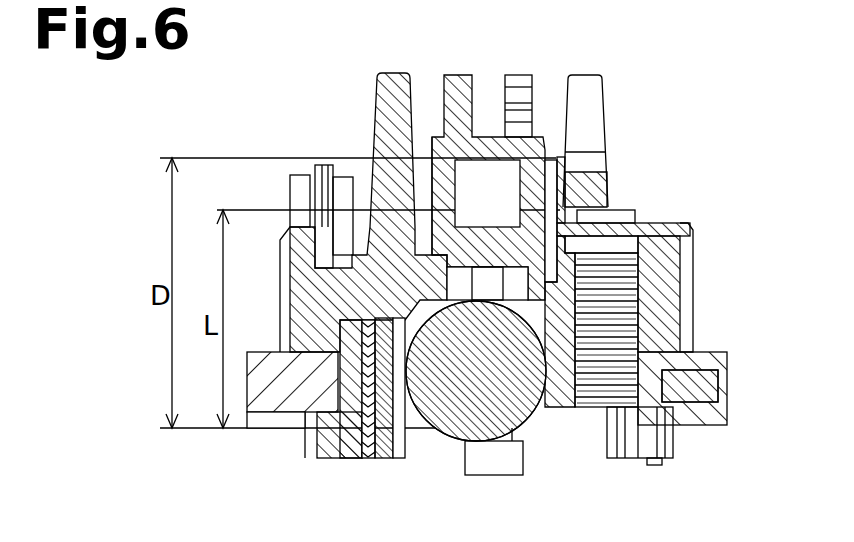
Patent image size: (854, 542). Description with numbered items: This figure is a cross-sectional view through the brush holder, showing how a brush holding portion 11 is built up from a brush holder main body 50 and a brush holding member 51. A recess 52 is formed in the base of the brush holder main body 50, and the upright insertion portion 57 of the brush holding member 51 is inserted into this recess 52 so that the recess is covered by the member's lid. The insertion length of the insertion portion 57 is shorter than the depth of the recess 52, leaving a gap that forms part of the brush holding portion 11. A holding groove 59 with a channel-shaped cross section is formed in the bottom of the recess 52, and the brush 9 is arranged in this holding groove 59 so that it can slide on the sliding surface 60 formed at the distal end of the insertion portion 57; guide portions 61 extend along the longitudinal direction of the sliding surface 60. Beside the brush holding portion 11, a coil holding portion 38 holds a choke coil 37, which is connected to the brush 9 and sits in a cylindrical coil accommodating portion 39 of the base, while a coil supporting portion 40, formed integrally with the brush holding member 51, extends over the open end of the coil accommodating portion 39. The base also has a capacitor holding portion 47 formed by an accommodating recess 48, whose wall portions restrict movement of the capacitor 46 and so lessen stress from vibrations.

The brush 9 is at (500, 209).
The brush holding portion 11 is at (553, 128).
The choke coil 37 is at (620, 400).
The coil holding portion 38 is at (654, 427).
The coil accommodating portion 39 is at (640, 293).
The coil supporting portion 40 is at (582, 418).
The capacitor 46 is at (494, 383).
The capacitor holding portion 47 is at (368, 456).
The accommodating recess 48 is at (415, 445).
The brush holder main body 50 is at (307, 454).
The brush holding member 51 is at (552, 425).
The recess 52 is at (395, 308).
The insertion portion 57 is at (613, 212).
The holding groove 59 is at (486, 166).
The sliding surface 60 is at (488, 228).
The guide portion 61 is at (573, 198).